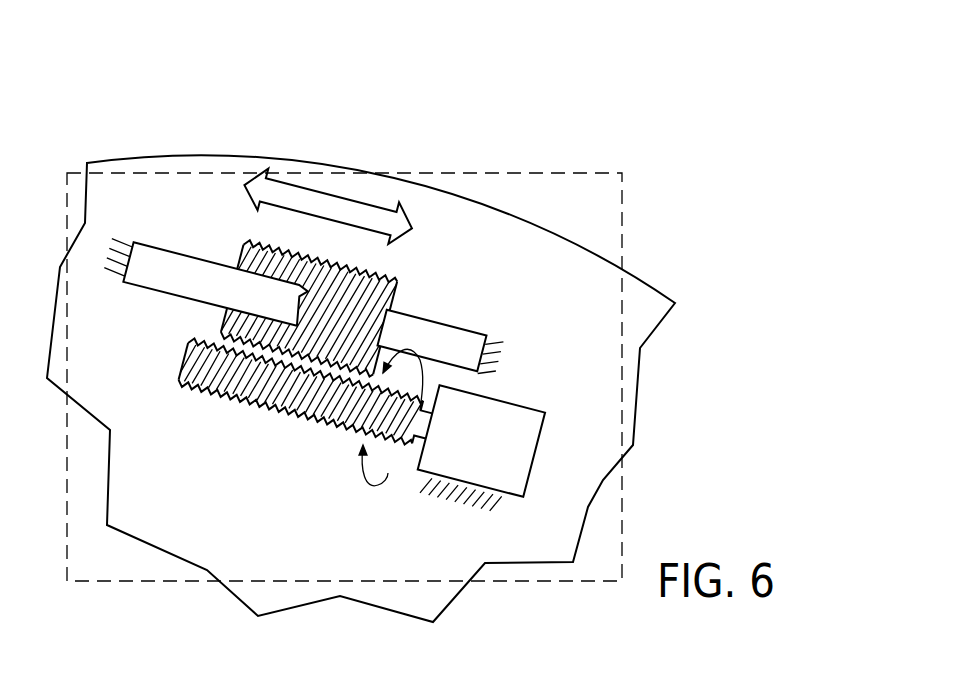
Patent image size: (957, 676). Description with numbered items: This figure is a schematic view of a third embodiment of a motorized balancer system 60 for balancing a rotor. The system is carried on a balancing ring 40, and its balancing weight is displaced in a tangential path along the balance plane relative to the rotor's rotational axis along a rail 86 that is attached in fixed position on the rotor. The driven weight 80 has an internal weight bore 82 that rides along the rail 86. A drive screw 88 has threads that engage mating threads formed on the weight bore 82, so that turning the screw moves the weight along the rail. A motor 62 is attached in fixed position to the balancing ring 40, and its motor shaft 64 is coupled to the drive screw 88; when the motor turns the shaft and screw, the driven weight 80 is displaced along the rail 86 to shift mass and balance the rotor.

The balancing ring 40 is at (353, 78).
The motorized balancer system 60 is at (544, 155).
The motor 62 is at (478, 451).
The motor shaft 64 is at (388, 430).
The driven weight 80 is at (308, 308).
The internal weight bore 82 is at (205, 282).
The rail 86 is at (440, 344).
The drive screw 88 is at (306, 393).